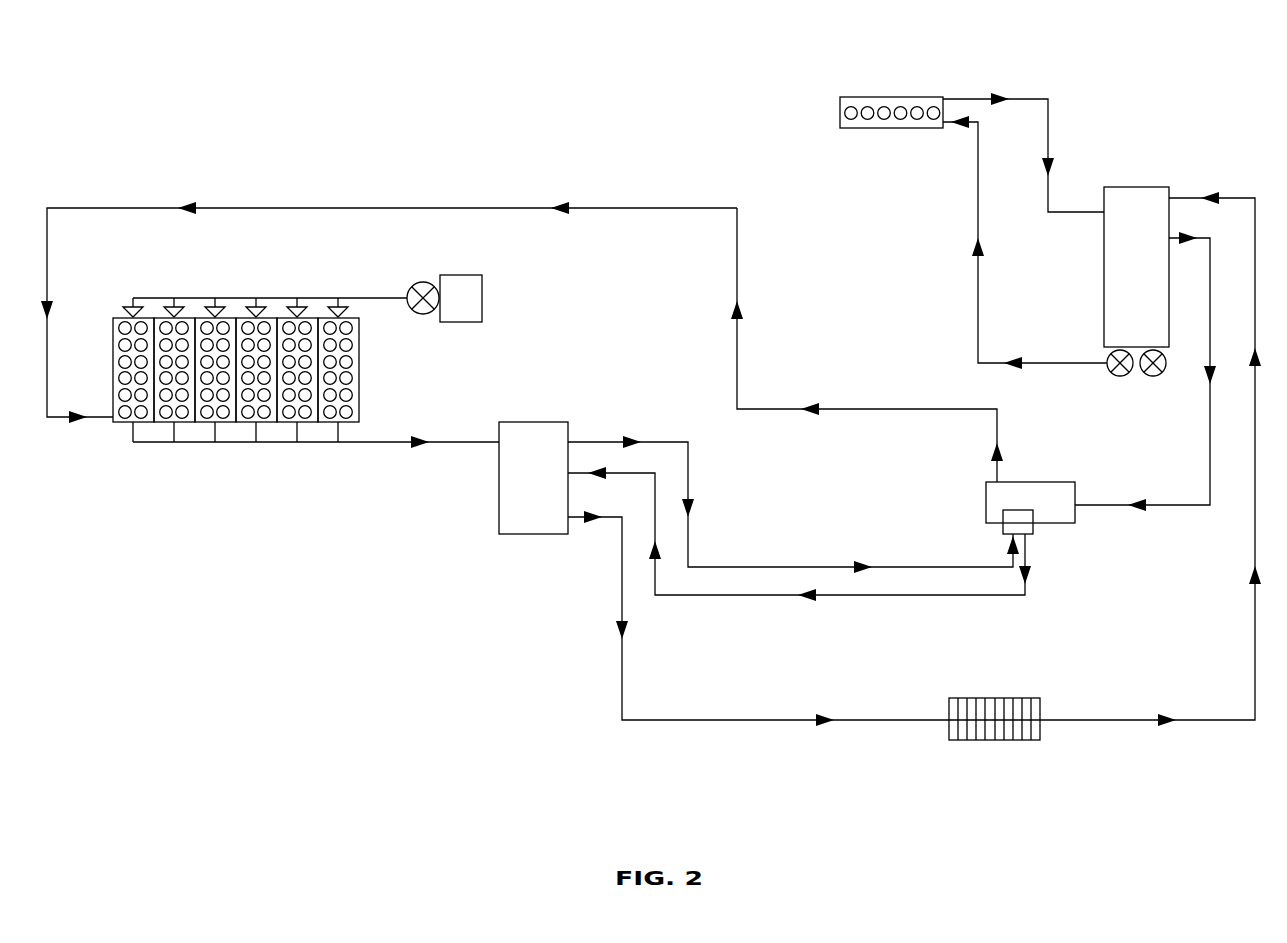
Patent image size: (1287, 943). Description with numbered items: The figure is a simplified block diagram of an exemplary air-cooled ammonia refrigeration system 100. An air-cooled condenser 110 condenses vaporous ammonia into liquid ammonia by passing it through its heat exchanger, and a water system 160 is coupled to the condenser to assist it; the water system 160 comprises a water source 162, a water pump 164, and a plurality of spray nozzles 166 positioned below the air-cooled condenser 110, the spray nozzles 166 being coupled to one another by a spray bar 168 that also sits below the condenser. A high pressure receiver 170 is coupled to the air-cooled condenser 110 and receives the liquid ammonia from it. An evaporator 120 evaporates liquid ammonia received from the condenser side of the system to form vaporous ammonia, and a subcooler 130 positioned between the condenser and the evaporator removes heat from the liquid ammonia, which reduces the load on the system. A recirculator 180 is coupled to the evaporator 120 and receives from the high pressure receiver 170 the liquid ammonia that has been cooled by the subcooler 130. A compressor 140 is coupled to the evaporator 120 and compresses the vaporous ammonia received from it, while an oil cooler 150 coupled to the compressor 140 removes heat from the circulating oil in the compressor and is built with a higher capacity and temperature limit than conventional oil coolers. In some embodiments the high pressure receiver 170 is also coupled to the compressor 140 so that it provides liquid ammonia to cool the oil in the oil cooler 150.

The cooling system 100 is at (336, 43).
The air-cooled condenser 110 is at (112, 330).
The evaporator 120 is at (878, 97).
The subcooler 130 is at (998, 742).
The compressor 140 is at (1030, 502).
The oil cooler 150 is at (1033, 528).
The water system 160 is at (306, 276).
The water source 162 is at (461, 298).
The water pump 164 is at (416, 283).
The spray nozzles 166 is at (350, 308).
The spray bar 168 is at (199, 298).
The high pressure receiver 170 is at (533, 478).
The recirculator 180 is at (1136, 281).